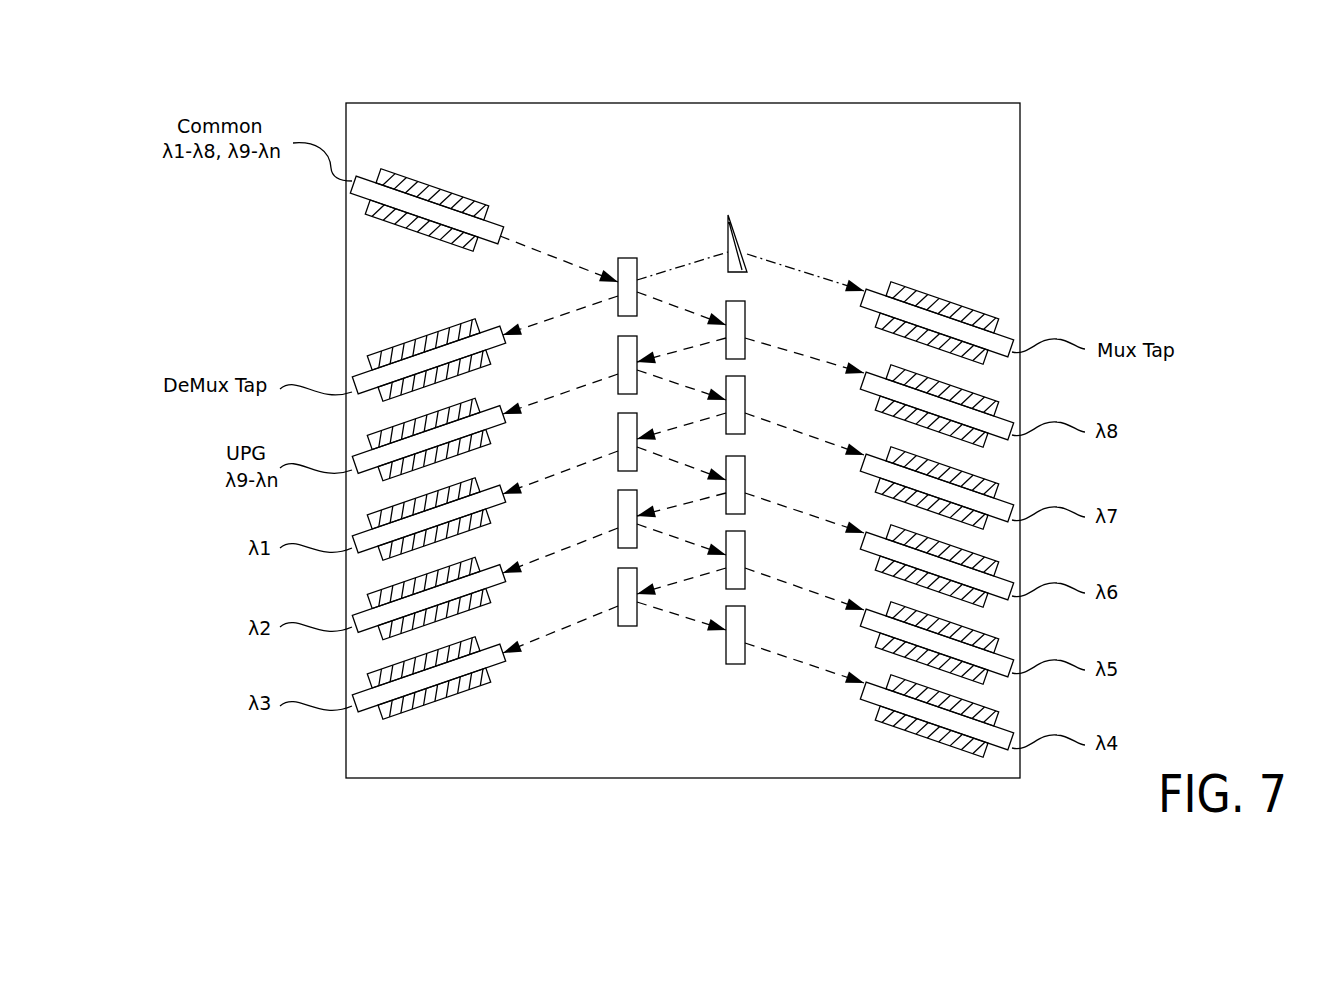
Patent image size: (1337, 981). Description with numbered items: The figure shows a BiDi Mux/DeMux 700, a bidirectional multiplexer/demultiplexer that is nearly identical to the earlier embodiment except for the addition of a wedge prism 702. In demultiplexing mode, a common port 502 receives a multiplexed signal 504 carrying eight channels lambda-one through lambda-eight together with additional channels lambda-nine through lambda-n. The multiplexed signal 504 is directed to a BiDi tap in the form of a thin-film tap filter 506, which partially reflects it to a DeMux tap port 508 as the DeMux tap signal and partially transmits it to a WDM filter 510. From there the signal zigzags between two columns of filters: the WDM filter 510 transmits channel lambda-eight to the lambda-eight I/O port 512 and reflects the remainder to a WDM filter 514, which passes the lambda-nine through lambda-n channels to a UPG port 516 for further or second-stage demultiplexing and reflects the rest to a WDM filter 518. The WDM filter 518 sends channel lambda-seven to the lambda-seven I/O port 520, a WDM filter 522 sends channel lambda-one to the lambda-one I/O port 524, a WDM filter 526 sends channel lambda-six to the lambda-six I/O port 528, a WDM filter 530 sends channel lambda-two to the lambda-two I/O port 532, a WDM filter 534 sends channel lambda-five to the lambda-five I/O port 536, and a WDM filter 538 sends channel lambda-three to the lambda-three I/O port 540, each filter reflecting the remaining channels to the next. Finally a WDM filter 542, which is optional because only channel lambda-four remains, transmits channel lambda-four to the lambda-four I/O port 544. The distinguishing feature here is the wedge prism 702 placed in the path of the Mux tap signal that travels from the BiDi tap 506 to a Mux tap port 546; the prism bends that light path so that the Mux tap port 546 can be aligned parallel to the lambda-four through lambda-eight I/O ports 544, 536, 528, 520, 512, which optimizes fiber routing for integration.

The BiDi Mux/DeMux 700 is at (418, 58).
The common port 502 is at (467, 190).
The multiplexed signal 504 is at (521, 245).
The thin-film tap filter 506 is at (633, 257).
The wedge prism 702 is at (738, 233).
The Mux tap port 546 is at (878, 290).
The DeMux tap port 508 is at (488, 323).
The WDM filter 510 is at (747, 333).
The WDM filter 514 is at (616, 366).
The λ8 I/O port 512 is at (878, 373).
The UPG port 516 is at (488, 403).
The WDM filter 518 is at (747, 409).
The WDM filter 522 is at (616, 443).
The λ7 I/O port 520 is at (878, 455).
The λ1 I/O port 524 is at (488, 482).
The WDM filter 526 is at (747, 485).
The WDM filter 530 is at (616, 520).
The λ6 I/O port 528 is at (878, 533).
The λ2 I/O port 532 is at (488, 562).
The WDM filter 534 is at (747, 561).
The WDM filter 538 is at (616, 598).
The λ5 I/O port 536 is at (878, 610).
The λ3 I/O port 540 is at (488, 641).
The WDM filter 542 is at (747, 636).
The λ4 I/O port 544 is at (878, 683).